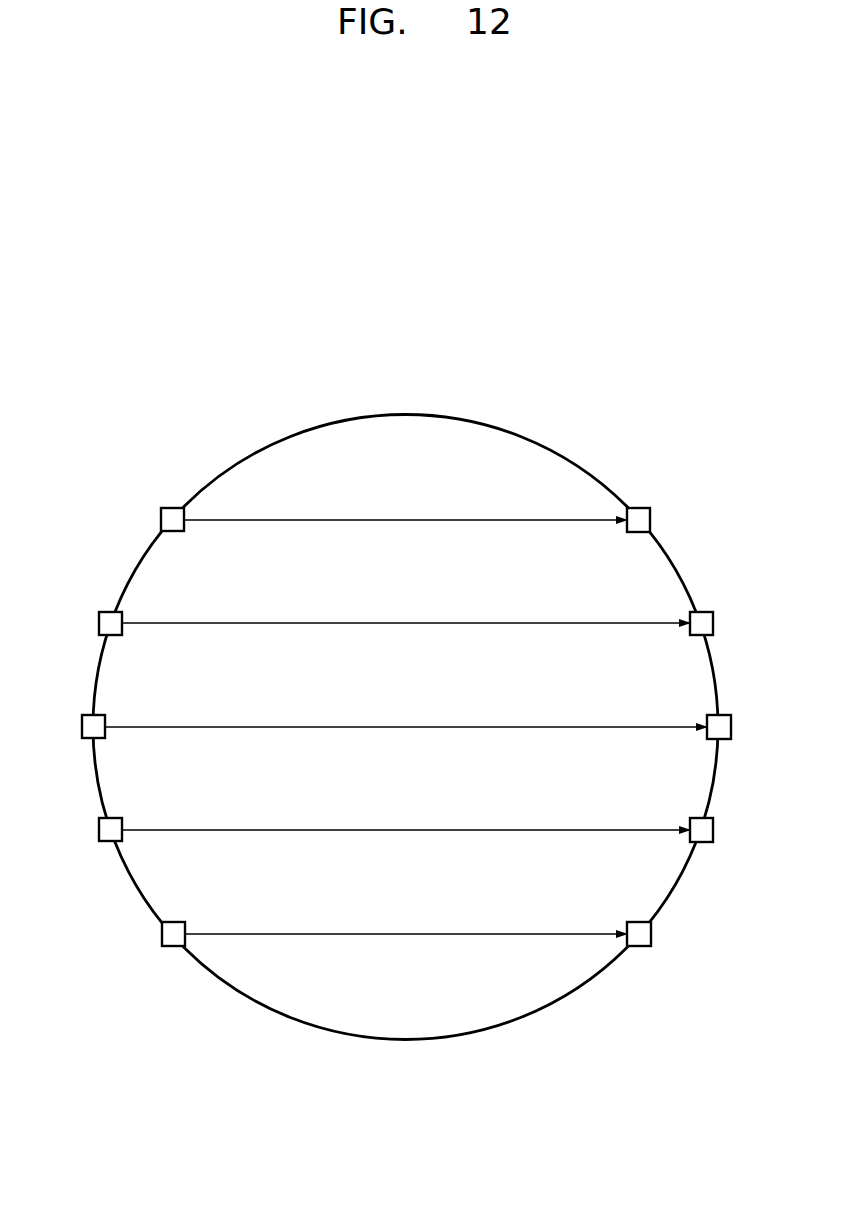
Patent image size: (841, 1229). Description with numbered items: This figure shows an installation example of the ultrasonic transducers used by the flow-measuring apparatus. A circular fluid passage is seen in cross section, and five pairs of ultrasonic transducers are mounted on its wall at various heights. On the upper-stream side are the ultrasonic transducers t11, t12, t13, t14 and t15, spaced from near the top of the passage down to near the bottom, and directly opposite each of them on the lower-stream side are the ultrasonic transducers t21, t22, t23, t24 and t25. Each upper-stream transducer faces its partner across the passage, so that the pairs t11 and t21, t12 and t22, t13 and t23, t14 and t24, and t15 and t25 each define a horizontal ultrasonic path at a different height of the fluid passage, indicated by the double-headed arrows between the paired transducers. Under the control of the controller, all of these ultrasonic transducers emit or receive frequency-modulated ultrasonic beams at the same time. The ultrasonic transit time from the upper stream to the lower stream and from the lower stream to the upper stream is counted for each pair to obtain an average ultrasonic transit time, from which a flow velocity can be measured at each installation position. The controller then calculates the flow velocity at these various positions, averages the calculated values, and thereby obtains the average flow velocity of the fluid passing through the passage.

The ultrasonic transducer t11 is at (161, 522).
The ultrasonic transducer t12 is at (99, 625).
The ultrasonic transducer t13 is at (82, 729).
The ultrasonic transducer t14 is at (99, 832).
The ultrasonic transducer t15 is at (162, 936).
The ultrasonic transducer t21 is at (650, 520).
The ultrasonic transducer t22 is at (713, 623).
The ultrasonic transducer t23 is at (731, 728).
The ultrasonic transducer t24 is at (713, 831).
The ultrasonic transducer t25 is at (651, 934).